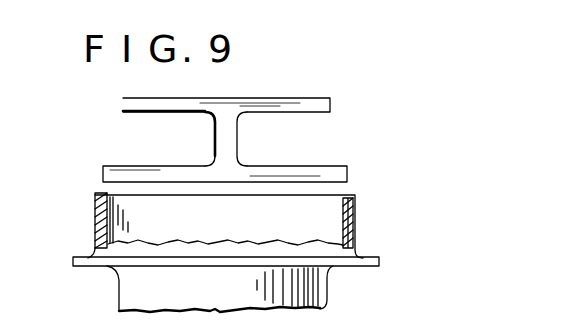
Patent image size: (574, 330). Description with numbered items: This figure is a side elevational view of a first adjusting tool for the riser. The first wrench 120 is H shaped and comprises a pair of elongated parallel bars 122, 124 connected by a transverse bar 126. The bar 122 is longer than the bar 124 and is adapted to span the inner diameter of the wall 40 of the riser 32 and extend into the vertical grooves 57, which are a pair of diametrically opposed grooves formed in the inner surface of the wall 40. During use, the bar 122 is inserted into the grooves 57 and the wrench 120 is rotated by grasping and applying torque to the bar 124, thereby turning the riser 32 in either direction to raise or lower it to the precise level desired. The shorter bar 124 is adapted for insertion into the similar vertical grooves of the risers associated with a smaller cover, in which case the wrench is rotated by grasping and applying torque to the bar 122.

The first wrench 120 is at (245, 140).
The bar 124 is at (135, 109).
The bar 122 is at (140, 173).
The transverse bar 126 is at (227, 133).
The vertical grooves 57 is at (102, 210).
The wall 40 is at (353, 232).
The riser 32 is at (397, 265).